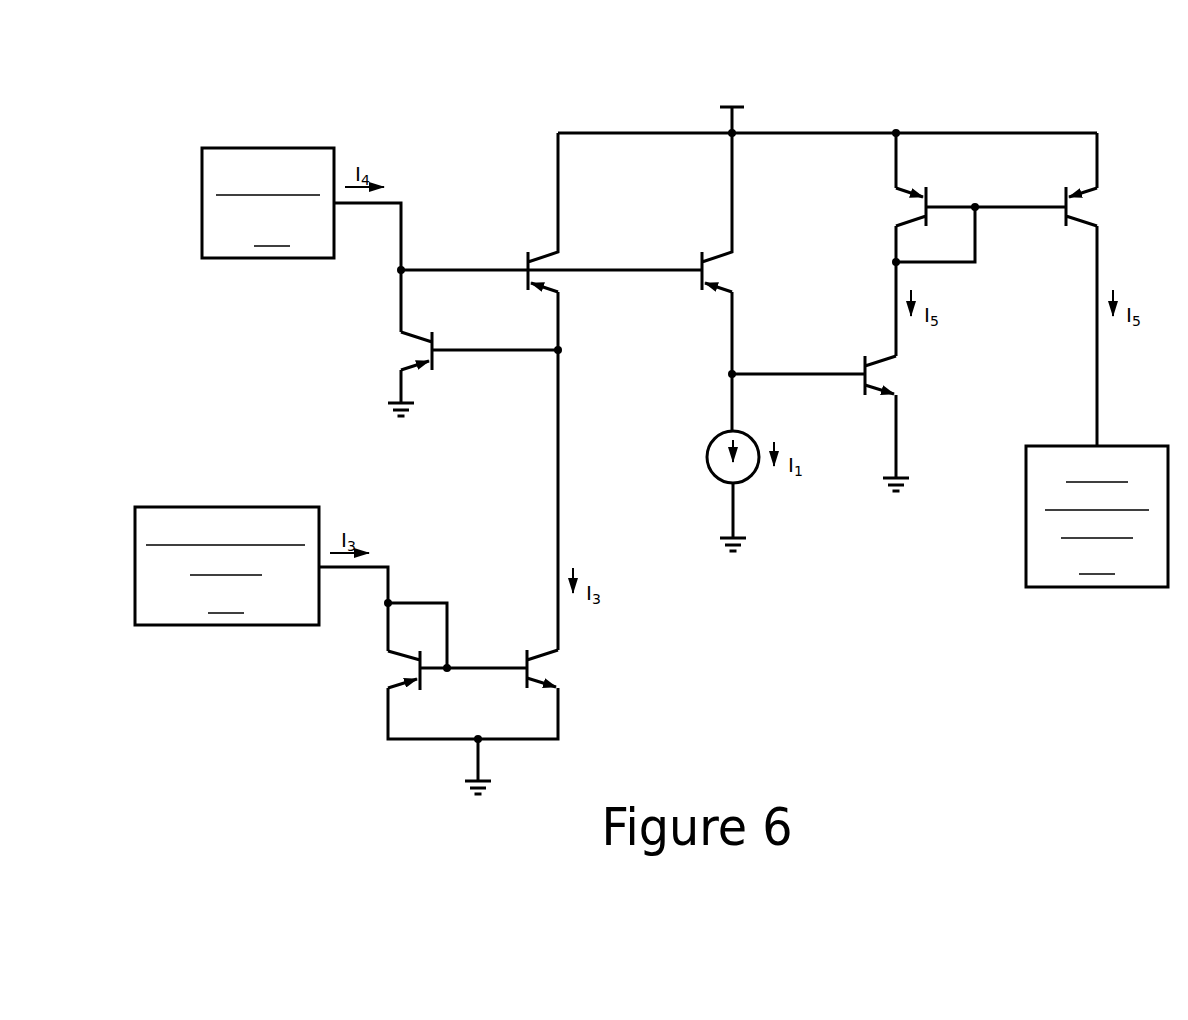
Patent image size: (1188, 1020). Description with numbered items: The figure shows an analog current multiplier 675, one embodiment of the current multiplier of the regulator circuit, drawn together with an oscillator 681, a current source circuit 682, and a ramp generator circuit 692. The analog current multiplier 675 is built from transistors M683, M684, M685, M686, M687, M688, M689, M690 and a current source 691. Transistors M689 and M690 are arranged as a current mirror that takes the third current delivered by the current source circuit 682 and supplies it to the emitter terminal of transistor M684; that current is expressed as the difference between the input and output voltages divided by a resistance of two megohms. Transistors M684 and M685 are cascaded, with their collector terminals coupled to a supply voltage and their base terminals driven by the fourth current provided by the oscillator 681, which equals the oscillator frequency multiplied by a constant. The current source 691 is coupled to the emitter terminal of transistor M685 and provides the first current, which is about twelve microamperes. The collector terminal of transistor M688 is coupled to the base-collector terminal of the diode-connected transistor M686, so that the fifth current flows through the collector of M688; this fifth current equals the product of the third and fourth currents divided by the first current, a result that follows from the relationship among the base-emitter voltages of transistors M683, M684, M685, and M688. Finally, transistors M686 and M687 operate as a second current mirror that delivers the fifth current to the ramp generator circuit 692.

The analog current multiplier 675 is at (824, 46).
The oscillator 681 is at (268, 203).
The current source circuit 682 is at (227, 566).
The current source 691 is at (716, 432).
The ramp generator circuit 692 is at (1097, 516).
The transistor M683 is at (386, 351).
The transistor M684 is at (525, 212).
The transistor M685 is at (699, 212).
The diode connected transistor M686 is at (877, 206).
The transistor M687 is at (1113, 206).
The transistor M688 is at (914, 375).
The transistor M689 is at (372, 670).
The transistor M690 is at (576, 669).